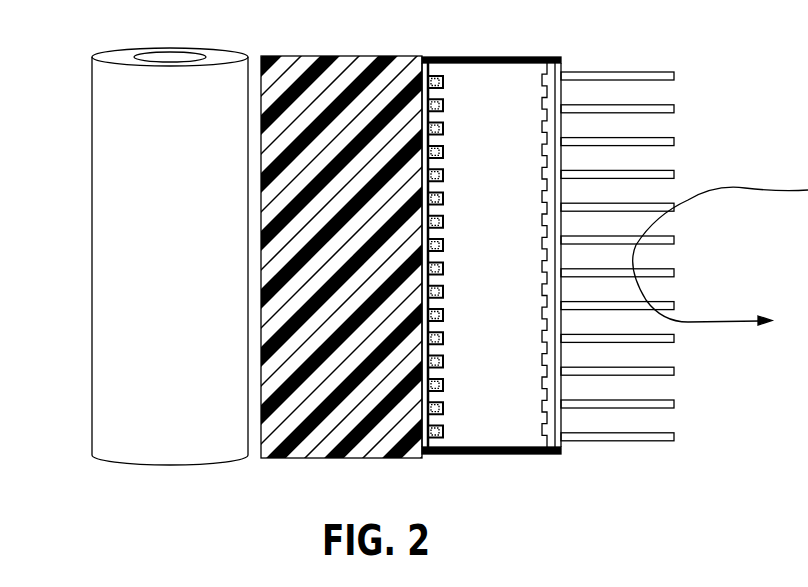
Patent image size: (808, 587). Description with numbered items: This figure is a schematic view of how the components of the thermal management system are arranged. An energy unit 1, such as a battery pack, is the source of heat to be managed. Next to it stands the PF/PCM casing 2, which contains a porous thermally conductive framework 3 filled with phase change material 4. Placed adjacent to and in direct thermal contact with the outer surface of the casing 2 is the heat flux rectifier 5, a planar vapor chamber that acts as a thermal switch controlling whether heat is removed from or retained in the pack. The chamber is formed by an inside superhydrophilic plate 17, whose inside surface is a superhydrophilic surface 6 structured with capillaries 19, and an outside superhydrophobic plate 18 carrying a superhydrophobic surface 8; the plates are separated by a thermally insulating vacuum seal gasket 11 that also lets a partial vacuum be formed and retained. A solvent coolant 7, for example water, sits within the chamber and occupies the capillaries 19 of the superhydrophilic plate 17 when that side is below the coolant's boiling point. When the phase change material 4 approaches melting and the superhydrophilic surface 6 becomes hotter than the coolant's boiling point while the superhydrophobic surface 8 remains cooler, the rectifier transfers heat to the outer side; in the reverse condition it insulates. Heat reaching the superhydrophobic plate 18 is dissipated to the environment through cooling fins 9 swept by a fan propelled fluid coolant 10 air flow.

The energy unit 1 is at (107, 274).
The PF/PCM casing 2 is at (340, 293).
The porous thermally conductive framework 3 is at (370, 73).
The phase change material (PCM) 4 is at (340, 156).
The heat flux rectifier 5 is at (487, 458).
The superhydrophilic surface 6 is at (442, 140).
The solvent coolant 7 is at (442, 192).
The superhydrophobic surface 8 is at (542, 253).
The cooling fins 9 is at (674, 403).
The fluid coolant 10 is at (768, 190).
The vacuum seal gasket 11 is at (492, 57).
The superhydrophilic plate 17 is at (454, 258).
The superhydrophobic plate 18 is at (529, 225).
The capillary 19 is at (443, 432).